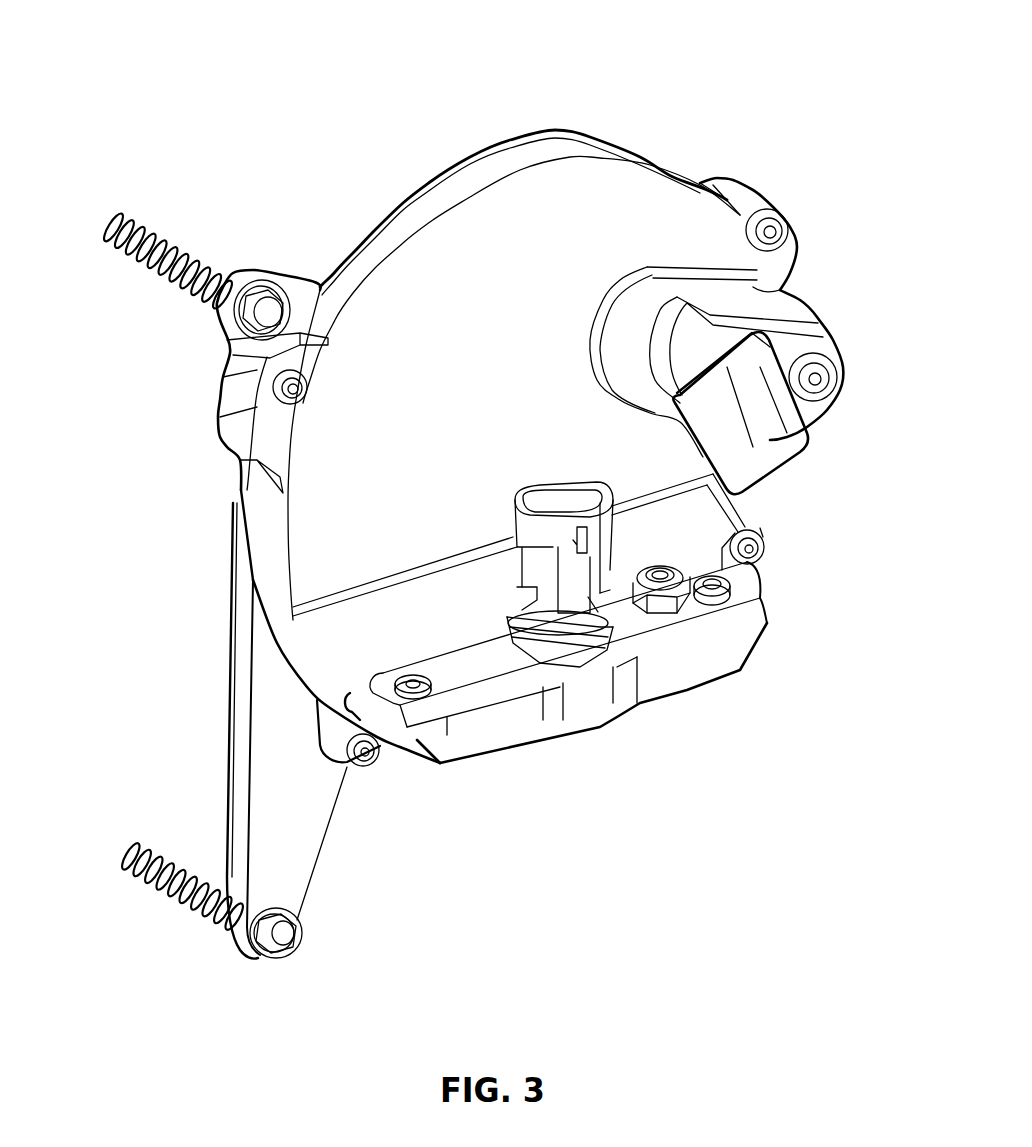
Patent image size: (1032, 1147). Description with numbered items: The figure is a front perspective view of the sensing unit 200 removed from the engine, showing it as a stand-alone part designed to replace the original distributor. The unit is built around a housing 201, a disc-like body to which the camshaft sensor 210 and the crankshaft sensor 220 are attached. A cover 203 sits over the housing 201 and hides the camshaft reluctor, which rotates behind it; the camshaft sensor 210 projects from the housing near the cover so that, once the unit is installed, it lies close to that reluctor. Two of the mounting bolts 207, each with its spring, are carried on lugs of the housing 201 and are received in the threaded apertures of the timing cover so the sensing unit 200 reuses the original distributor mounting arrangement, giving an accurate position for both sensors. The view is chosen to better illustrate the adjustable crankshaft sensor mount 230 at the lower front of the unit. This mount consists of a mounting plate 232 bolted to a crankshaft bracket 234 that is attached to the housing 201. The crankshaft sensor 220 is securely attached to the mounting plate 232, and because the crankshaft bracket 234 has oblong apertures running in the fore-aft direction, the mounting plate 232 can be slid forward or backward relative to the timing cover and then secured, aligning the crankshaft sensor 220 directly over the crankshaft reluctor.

The sensing unit 200 is at (622, 112).
The housing 201 is at (304, 281).
The cover 203 is at (682, 243).
The mounting bolts 207 is at (150, 263).
The camshaft sensor 210 is at (756, 422).
The crankshaft sensor 220 is at (571, 560).
The adjustable crankshaft sensor mount 230 is at (480, 665).
The mounting plate 232 is at (747, 593).
The crankshaft bracket 234 is at (453, 747).